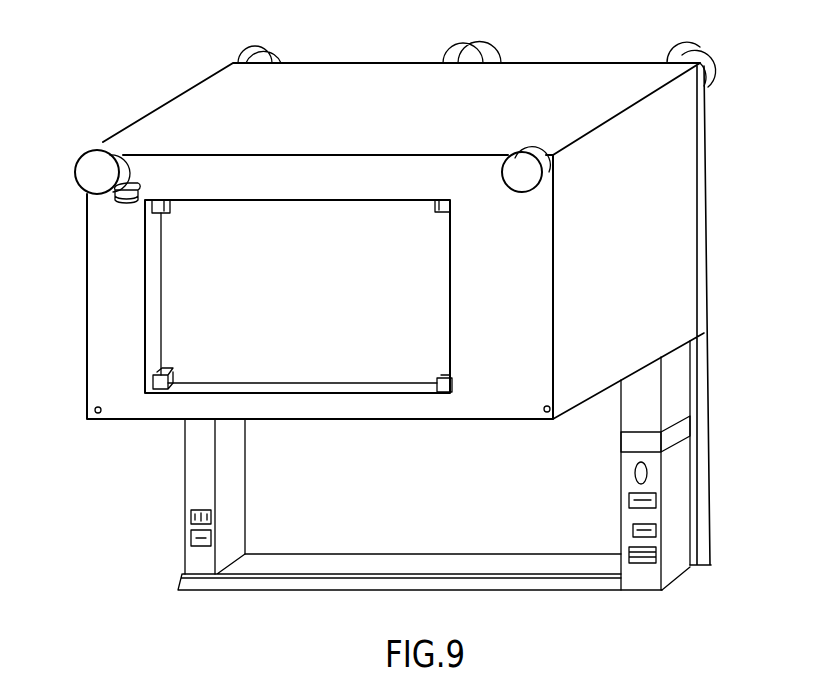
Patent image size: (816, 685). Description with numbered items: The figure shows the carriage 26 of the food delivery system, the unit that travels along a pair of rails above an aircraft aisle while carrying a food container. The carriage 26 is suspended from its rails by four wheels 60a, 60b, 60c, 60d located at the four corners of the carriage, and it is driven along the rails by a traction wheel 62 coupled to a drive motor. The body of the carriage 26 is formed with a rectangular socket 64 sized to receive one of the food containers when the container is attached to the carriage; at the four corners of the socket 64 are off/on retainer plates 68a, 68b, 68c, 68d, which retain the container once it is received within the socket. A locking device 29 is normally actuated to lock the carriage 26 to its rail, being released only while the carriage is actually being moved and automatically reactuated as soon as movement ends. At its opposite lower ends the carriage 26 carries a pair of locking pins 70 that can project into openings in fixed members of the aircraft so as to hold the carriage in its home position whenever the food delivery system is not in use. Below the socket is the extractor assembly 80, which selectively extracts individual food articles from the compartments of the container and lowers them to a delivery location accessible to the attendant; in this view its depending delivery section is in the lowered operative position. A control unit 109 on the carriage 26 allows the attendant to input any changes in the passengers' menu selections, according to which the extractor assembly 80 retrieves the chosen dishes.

The carriage 26 is at (712, 257).
The locking device 29 is at (113, 200).
The wheel 60a is at (90, 152).
The wheel 60b is at (274, 60).
The wheel 60c is at (701, 56).
The wheel 60d is at (544, 155).
The traction wheel 62 is at (463, 53).
The rectangular socket 64 is at (355, 207).
The retainer plate 68a is at (170, 378).
The retainer plate 68b is at (166, 208).
The retainer plate 68c is at (440, 206).
The retainer plate 68d is at (440, 380).
The locking pin 70 is at (95, 410).
The extractor assembly 80 is at (183, 504).
The control unit 109 is at (652, 485).